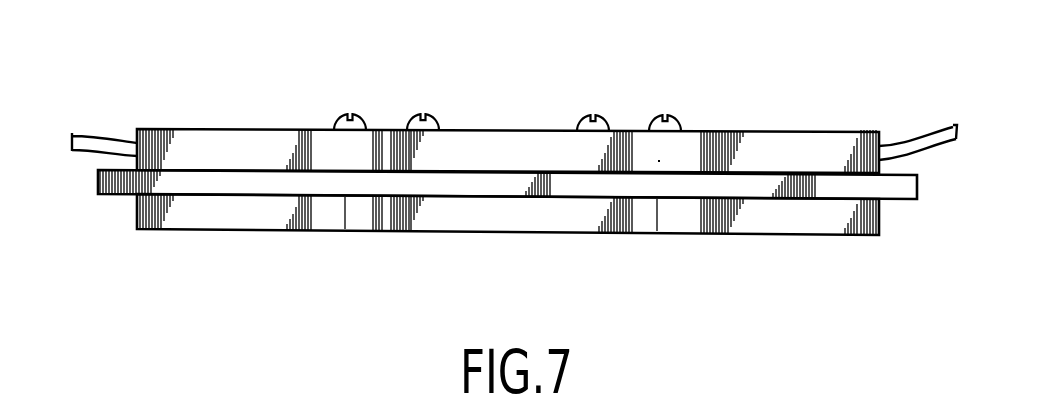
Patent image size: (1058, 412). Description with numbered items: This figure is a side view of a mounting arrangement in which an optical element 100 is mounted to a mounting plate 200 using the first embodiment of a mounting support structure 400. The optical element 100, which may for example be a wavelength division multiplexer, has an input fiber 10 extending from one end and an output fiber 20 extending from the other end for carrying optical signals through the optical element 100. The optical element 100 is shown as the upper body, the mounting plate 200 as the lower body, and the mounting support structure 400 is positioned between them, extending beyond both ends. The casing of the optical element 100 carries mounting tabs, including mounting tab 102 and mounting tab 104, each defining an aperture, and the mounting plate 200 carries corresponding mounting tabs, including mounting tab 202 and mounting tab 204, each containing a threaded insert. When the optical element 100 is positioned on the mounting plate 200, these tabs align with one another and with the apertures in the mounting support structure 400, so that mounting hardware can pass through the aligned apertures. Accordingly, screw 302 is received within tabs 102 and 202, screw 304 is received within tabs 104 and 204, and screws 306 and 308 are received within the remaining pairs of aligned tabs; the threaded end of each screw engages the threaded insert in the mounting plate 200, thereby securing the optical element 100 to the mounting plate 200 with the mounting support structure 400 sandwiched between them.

The input fiber 10 is at (112, 137).
The output fiber 20 is at (932, 127).
The optical element 100 is at (794, 132).
The mounting tab 102 is at (698, 132).
The mounting tab 104 is at (328, 140).
The mounting plate 200 is at (813, 237).
The mounting tab 202 is at (673, 220).
The mounting tab 204 is at (336, 220).
The screw 302 is at (678, 120).
The screw 304 is at (367, 120).
The screw 306 is at (432, 120).
The screw 308 is at (600, 120).
The mounting support structure 400 is at (893, 201).